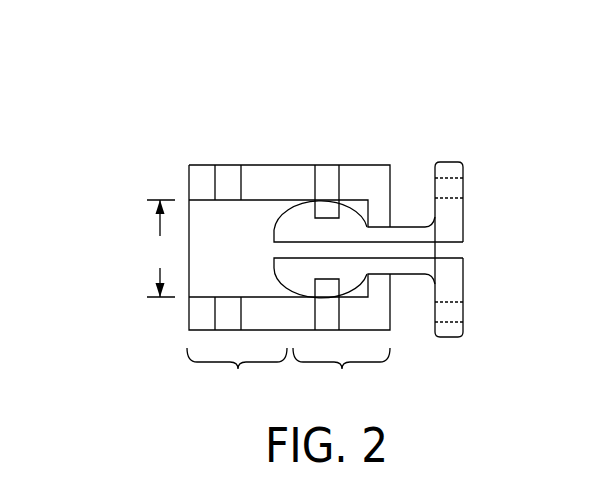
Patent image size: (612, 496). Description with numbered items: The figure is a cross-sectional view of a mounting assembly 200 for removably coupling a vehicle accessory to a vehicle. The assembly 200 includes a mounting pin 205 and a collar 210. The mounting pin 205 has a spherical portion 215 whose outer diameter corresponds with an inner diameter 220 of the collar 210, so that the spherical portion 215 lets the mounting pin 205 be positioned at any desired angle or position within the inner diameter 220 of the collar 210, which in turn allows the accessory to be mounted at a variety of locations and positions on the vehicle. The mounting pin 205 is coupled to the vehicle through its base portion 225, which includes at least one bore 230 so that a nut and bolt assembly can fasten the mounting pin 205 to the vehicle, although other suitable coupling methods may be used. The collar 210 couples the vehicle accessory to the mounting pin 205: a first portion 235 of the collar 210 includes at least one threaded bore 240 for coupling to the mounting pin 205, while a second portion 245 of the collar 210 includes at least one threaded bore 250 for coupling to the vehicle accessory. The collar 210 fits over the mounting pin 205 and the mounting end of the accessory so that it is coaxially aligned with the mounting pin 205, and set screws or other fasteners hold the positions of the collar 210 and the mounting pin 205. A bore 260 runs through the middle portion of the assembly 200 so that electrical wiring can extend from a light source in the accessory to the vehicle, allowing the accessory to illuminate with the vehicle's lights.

The mounting assembly 200 is at (288, 69).
The mounting pin 205 is at (449, 140).
The collar 210 is at (170, 325).
The spherical portion 215 is at (275, 240).
The inner diameter 220 is at (158, 248).
The base portion 225 is at (463, 228).
The bore 230 is at (463, 314).
The first portion 235 is at (341, 375).
The threaded bore 240 is at (328, 165).
The second portion 245 is at (237, 375).
The threaded bore 250 is at (223, 165).
The bore 260 is at (472, 254).